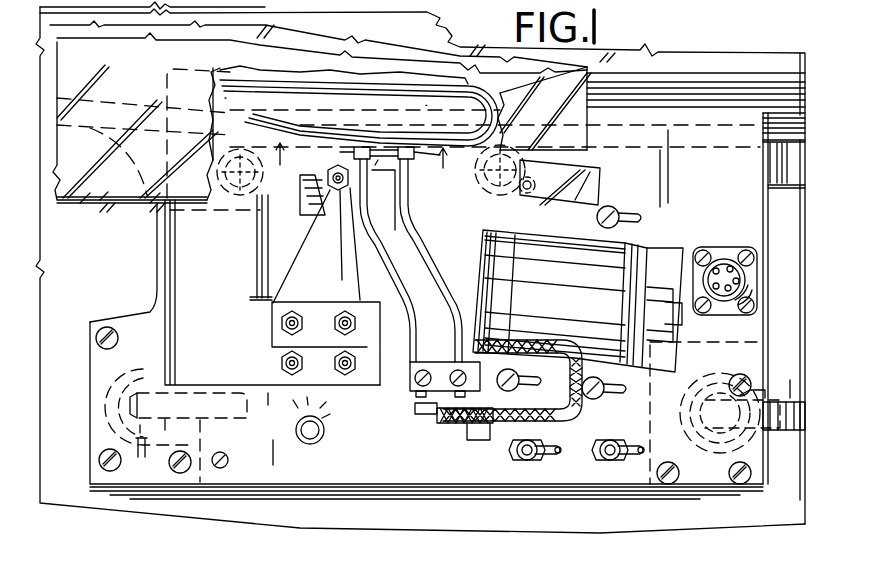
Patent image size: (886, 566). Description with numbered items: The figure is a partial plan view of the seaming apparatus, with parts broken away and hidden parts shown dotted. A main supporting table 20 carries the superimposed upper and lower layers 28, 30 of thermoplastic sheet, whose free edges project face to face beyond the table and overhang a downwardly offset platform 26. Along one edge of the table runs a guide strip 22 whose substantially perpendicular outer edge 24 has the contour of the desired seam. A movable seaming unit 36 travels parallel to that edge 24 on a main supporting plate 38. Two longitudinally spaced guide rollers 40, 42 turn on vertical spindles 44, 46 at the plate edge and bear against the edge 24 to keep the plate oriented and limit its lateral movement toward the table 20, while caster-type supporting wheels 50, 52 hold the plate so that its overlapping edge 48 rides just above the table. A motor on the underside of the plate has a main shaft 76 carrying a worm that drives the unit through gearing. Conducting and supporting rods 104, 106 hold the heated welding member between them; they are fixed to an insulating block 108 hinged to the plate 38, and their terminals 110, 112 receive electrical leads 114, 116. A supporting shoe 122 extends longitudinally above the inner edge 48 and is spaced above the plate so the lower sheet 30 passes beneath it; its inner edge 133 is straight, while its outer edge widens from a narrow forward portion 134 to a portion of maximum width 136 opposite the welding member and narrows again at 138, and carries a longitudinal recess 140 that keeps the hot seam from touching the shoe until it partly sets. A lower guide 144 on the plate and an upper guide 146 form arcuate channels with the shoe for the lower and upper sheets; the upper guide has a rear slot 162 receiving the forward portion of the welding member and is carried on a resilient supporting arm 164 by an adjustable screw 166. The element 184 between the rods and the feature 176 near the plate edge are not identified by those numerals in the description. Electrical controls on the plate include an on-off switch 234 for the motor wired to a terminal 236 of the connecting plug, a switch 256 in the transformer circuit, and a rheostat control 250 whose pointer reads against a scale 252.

The main supporting table 20 is at (673, 55).
The guide strip 22 is at (788, 130).
The outer edge 24 is at (787, 147).
The downwardly offset platform 26 is at (222, 532).
The upper layer 28 is at (230, 42).
The lower layer 30 is at (285, 45).
The seaming unit 36 is at (158, 488).
The main supporting plate 38 is at (420, 490).
The guide roller 40 is at (272, 292).
The guide roller 42 is at (520, 163).
The vertical spindle 44 is at (220, 174).
The vertical spindle 46 is at (500, 175).
The overlapping edge 48 is at (680, 114).
The supporting roller 50 is at (176, 400).
The supporting roller 52 is at (786, 398).
The main shaft 76 is at (578, 301).
The conducting and supporting rod 104 is at (388, 260).
The conducting and supporting rod 106 is at (428, 262).
The insulating block 108 is at (412, 365).
The terminal 110 is at (416, 414).
The terminal 112 is at (462, 428).
The electrical lead 114 is at (503, 408).
The electrical lead 116 is at (520, 435).
The supporting shoe 122 is at (362, 97).
The inner edge 133 is at (350, 78).
The portion of lesser width 134 is at (300, 140).
The intermediate portion 136 is at (392, 140).
The rearward end 138 is at (463, 138).
The longitudinally extending recess 140 is at (370, 135).
The lower guide 144 is at (258, 266).
The upper guide 146 is at (262, 232).
The slot 162 is at (300, 293).
The resilient supporting arm 164 is at (272, 303).
The vertical bolt 166 is at (335, 195).
The cover lip 176 is at (587, 77).
The cable connector 184 is at (390, 188).
The on-off switch 234 is at (608, 462).
The terminal 236 is at (745, 280).
The rheostat 250 is at (312, 444).
The scale 252 is at (330, 410).
The switch 256 is at (527, 462).